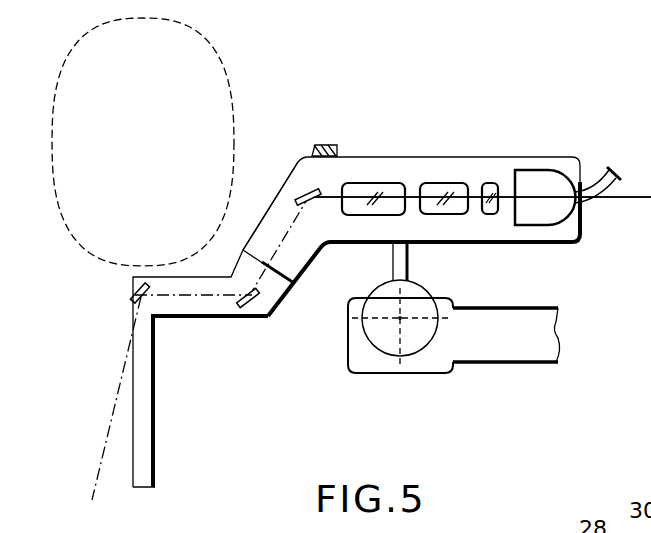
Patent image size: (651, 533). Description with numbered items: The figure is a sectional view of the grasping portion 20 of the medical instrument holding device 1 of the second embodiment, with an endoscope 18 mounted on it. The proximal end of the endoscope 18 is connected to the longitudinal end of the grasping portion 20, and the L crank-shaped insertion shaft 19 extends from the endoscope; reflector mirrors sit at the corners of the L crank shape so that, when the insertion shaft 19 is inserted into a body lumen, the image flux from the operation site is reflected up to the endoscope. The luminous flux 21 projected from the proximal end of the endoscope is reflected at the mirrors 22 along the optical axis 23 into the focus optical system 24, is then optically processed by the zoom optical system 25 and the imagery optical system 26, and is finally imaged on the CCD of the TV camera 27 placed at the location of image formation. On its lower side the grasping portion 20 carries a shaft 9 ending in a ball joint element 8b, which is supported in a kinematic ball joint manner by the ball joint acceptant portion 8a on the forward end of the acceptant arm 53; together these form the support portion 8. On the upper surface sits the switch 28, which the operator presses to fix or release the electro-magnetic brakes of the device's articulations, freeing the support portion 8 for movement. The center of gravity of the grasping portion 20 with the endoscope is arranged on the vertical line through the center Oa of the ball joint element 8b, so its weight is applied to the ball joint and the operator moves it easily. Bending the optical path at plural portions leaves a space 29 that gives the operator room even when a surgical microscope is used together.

The vehicle display device 1 is at (528, 384).
The support portion 8 is at (357, 330).
The ball joint acceptant portion 8a is at (353, 357).
The ball joint element 8b is at (377, 290).
The shaft 9 is at (393, 258).
The endoscope 18 is at (113, 396).
The insertion shaft 19 is at (148, 428).
The grasping portion 20 is at (470, 143).
The luminous flux 21 is at (285, 233).
The mirrors 22 is at (305, 190).
The optical axis line 23 is at (630, 200).
The focus optical system 24 is at (368, 183).
The zoom optical system 25 is at (434, 183).
The imagery optical system 26 is at (490, 183).
The TV camera 27 is at (553, 180).
The switch 28 is at (326, 145).
The space 29 is at (207, 63).
The acceptant arm 53 is at (508, 308).
The center of ball joint element Oa is at (401, 319).